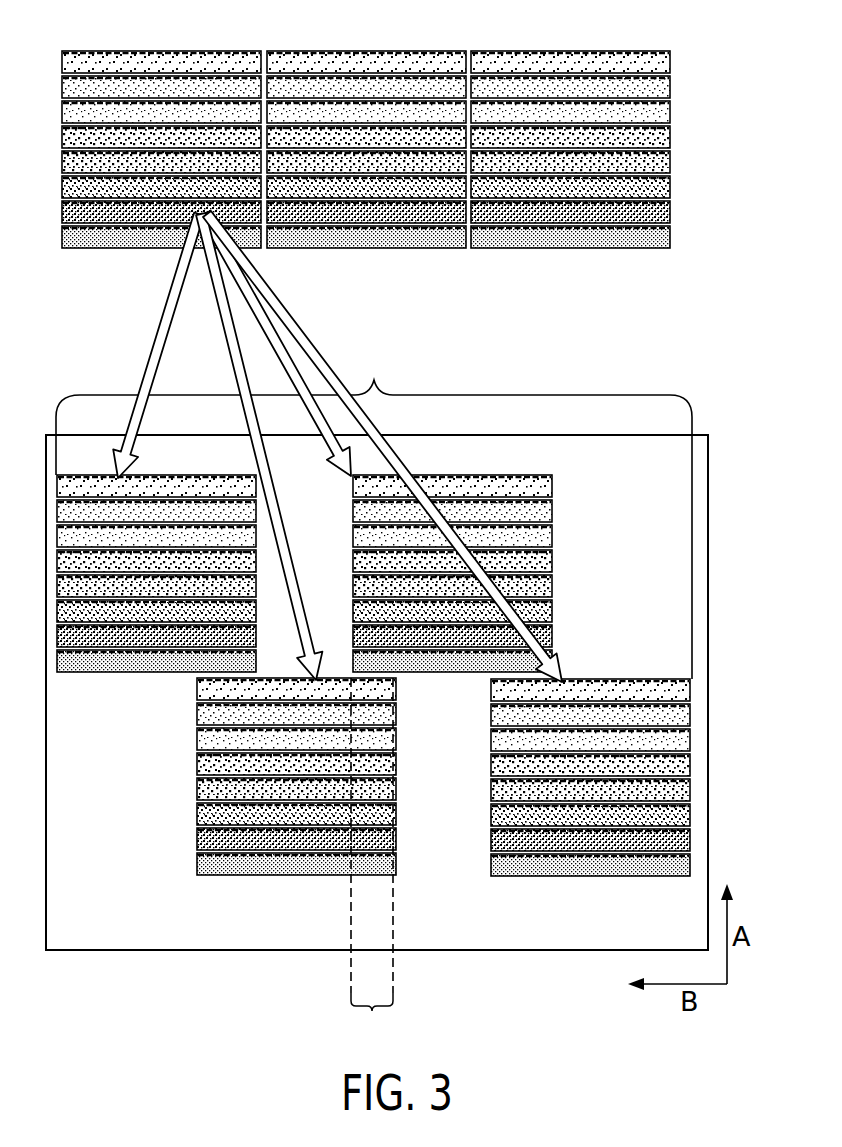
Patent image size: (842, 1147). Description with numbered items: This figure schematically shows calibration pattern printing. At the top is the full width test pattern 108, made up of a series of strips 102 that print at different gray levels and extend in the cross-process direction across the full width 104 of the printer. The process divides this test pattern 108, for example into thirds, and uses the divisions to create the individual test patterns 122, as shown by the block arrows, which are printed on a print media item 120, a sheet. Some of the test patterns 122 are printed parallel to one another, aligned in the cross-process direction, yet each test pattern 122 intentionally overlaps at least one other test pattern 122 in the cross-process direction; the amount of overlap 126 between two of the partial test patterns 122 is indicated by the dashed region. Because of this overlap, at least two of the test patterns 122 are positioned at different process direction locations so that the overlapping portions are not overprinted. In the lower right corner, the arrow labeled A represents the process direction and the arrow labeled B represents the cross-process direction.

The strips 102 is at (682, 718).
The full width 104 is at (374, 511).
The test pattern 108 is at (665, 35).
The print media item 120 is at (180, 957).
The test patterns 122 is at (104, 682).
The amount of overlap 126 is at (372, 860).